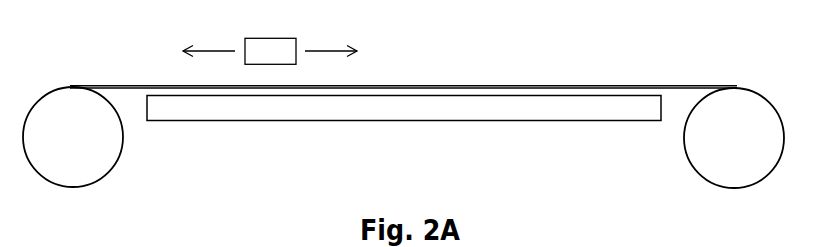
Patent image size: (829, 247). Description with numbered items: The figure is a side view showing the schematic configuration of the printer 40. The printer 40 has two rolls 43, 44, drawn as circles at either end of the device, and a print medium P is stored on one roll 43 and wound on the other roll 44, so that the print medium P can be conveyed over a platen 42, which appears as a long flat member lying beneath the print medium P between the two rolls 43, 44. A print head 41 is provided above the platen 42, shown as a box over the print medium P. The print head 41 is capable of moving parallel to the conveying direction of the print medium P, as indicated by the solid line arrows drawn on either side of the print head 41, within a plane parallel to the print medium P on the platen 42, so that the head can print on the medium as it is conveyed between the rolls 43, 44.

The printer 40 is at (719, 60).
The print head 41 is at (294, 38).
The platen 42 is at (294, 121).
The roll 43 is at (123, 142).
The roll 44 is at (685, 142).
The print medium P is at (498, 86).